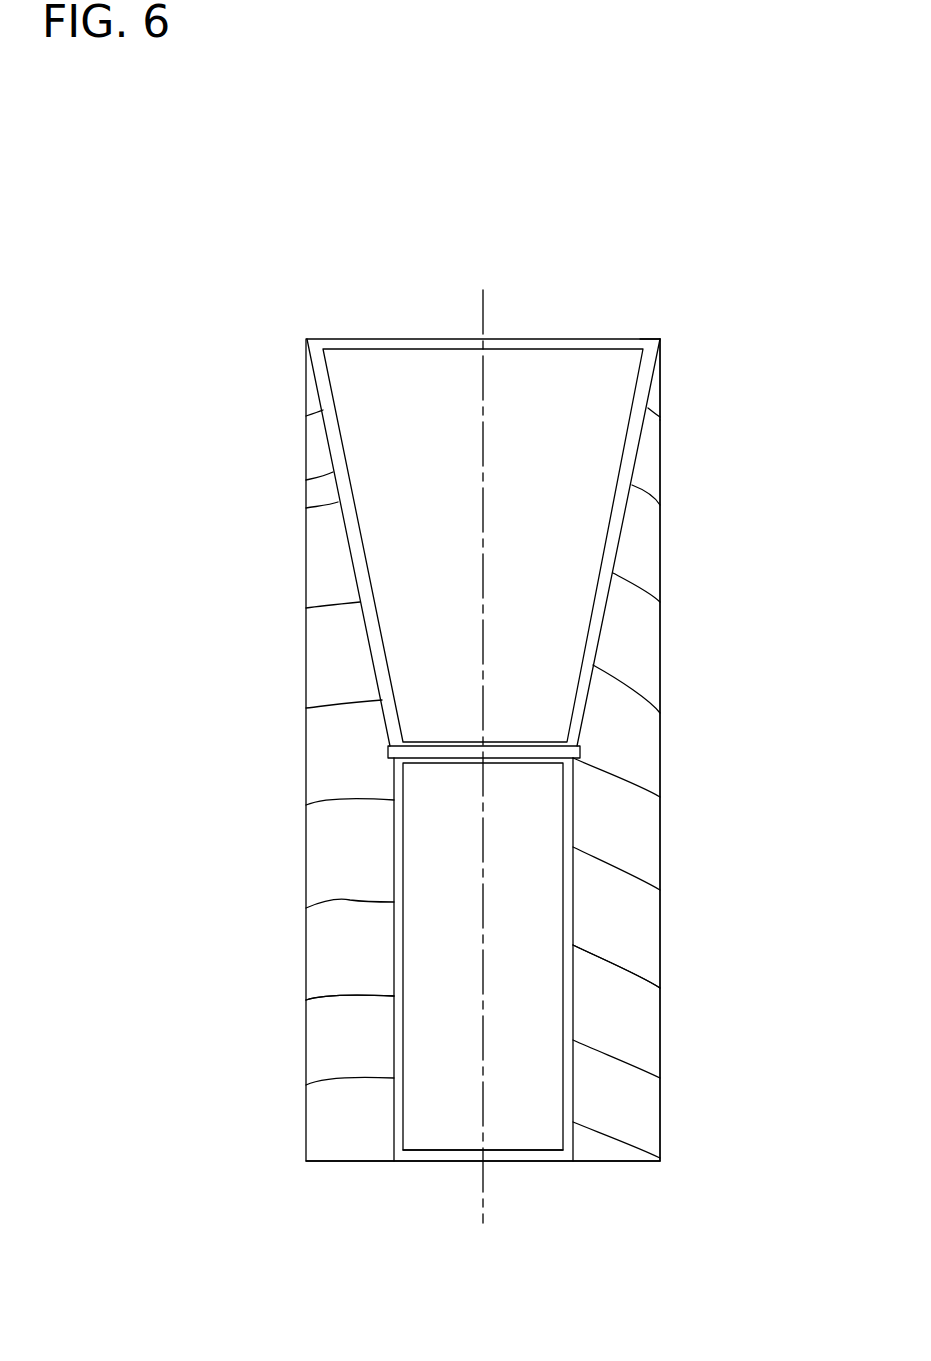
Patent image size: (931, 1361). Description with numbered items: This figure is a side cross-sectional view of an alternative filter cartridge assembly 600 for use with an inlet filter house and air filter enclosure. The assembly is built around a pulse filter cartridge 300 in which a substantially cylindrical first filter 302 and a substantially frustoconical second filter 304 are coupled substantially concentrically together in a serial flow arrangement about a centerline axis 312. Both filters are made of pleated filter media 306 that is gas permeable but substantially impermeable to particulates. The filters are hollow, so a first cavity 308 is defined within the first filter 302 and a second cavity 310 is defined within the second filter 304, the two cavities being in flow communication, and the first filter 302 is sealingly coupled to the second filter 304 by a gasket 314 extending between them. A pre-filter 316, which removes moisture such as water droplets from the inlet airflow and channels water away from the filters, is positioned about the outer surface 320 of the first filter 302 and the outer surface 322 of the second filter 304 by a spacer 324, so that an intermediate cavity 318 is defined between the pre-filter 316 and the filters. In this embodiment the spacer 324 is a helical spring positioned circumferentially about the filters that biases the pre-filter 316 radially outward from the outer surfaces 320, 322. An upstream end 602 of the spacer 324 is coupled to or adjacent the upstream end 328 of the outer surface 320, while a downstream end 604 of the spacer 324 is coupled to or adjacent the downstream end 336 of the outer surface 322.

The filter cartridge assembly 600 is at (242, 282).
The centerline axis 312 is at (483, 290).
The pulse filter cartridge 300 is at (557, 338).
The second cavity 310 is at (557, 567).
The gasket 314 is at (580, 751).
The first cavity 308 is at (546, 914).
The downstream end of outer surface 336 is at (656, 332).
The downstream end of spacer 604 is at (668, 342).
The outer surface of second filter 322 is at (306, 480).
The pleated filter media 306 is at (364, 578).
The second filter 304 is at (620, 543).
The pre-filter 316 is at (663, 857).
The first filter 302 is at (573, 920).
The spacer 324 is at (645, 968).
The intermediate cavity 318 is at (382, 842).
The outer surface of first filter 320 is at (394, 1028).
The upstream end of outer surface 328 is at (565, 1172).
The upstream end of spacer 602 is at (637, 1177).